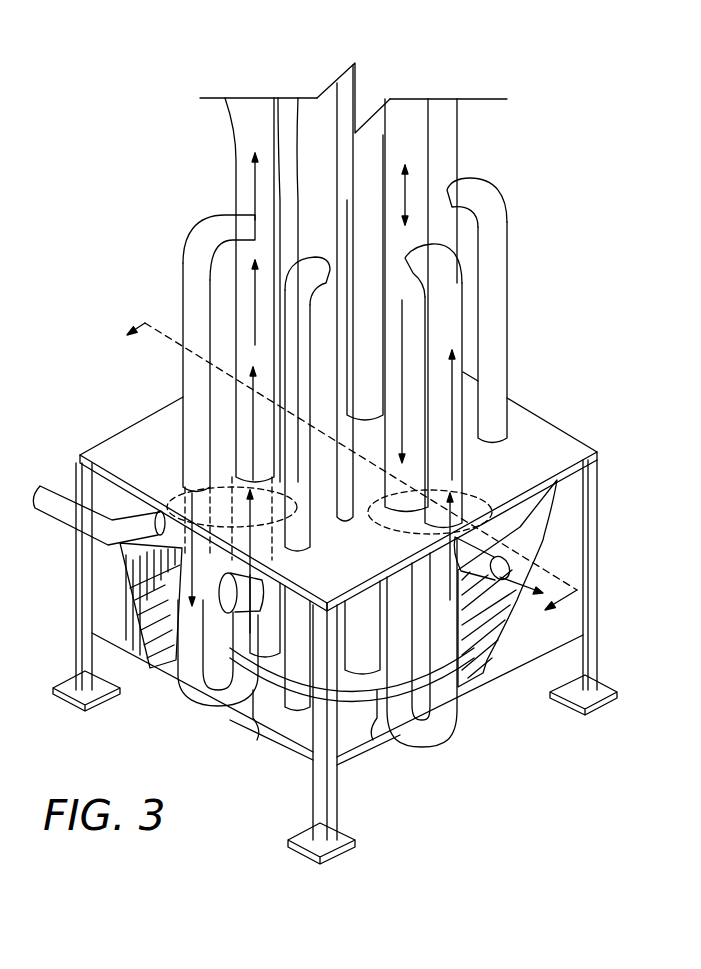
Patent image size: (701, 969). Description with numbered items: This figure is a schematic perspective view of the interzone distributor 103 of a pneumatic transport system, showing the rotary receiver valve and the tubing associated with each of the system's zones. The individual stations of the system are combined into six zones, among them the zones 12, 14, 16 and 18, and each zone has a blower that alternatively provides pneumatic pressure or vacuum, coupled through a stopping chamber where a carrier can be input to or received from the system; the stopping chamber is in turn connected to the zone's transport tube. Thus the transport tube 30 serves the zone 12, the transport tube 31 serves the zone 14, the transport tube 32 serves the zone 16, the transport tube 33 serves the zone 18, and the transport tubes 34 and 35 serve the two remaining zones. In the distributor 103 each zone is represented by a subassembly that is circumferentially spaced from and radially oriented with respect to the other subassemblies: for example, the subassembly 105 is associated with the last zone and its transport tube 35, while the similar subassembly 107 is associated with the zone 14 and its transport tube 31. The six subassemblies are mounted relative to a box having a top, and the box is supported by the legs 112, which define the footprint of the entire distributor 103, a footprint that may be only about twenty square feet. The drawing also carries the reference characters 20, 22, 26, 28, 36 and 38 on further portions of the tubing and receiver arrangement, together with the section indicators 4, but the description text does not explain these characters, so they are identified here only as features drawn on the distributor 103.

The section line 4- 4 is at (338, 477).
The zone 12 is at (489, 491).
The zone 14 is at (158, 466).
The zone 16 is at (453, 115).
The zone 18 is at (480, 425).
The opening in plate 20 is at (393, 503).
The outlet stub 22 is at (470, 492).
The opening in plate 26 is at (240, 452).
The inlet tube 28 is at (185, 310).
The transport tube 30 is at (348, 72).
The transport tube 31 is at (243, 120).
The transport tube 32 is at (283, 113).
The transport tube 33 is at (386, 135).
The transport tube 34 is at (455, 143).
The transport tube 35 is at (406, 117).
The collector ring 36 is at (380, 718).
The U-shaped outlet tube 38 is at (172, 648).
The distributor 103 is at (550, 328).
The subassembly 105 is at (455, 267).
The subassembly 107 is at (180, 233).
The legs 112 is at (603, 688).